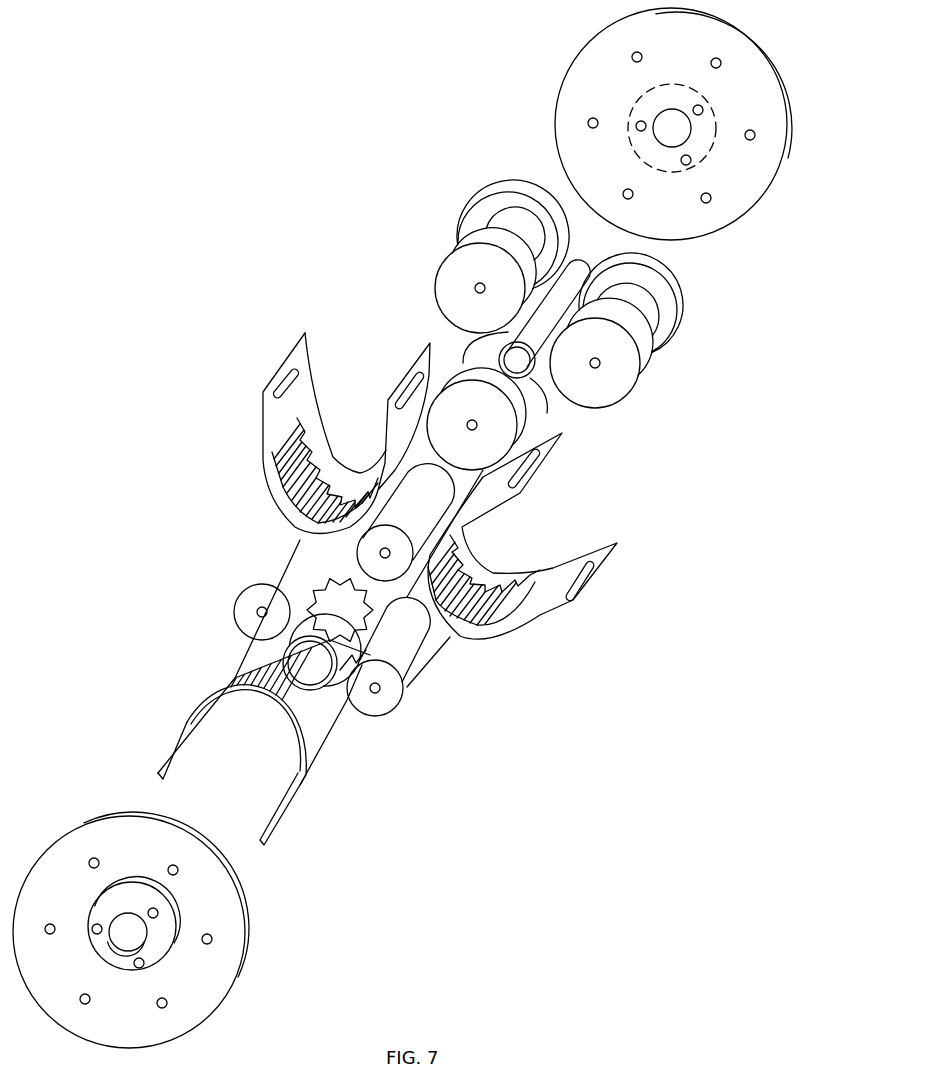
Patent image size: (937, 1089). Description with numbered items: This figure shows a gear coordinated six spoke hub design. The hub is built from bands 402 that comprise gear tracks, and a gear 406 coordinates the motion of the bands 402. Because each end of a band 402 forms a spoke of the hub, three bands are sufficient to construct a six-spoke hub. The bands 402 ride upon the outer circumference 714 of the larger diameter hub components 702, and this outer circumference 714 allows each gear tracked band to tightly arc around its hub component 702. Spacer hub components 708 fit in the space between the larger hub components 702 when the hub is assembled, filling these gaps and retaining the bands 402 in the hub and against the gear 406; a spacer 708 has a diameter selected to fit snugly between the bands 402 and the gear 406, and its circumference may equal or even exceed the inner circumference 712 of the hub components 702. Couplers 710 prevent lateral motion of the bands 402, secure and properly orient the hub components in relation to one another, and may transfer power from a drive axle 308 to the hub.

The drive axle 308 is at (580, 295).
The band 402 is at (273, 500).
The gear 406 is at (300, 613).
The hub component 702 is at (478, 218).
The spacer hub component 708 is at (355, 543).
The coupler 710 is at (787, 155).
The inner circumference 712 is at (652, 327).
The outer circumference 714 is at (518, 180).